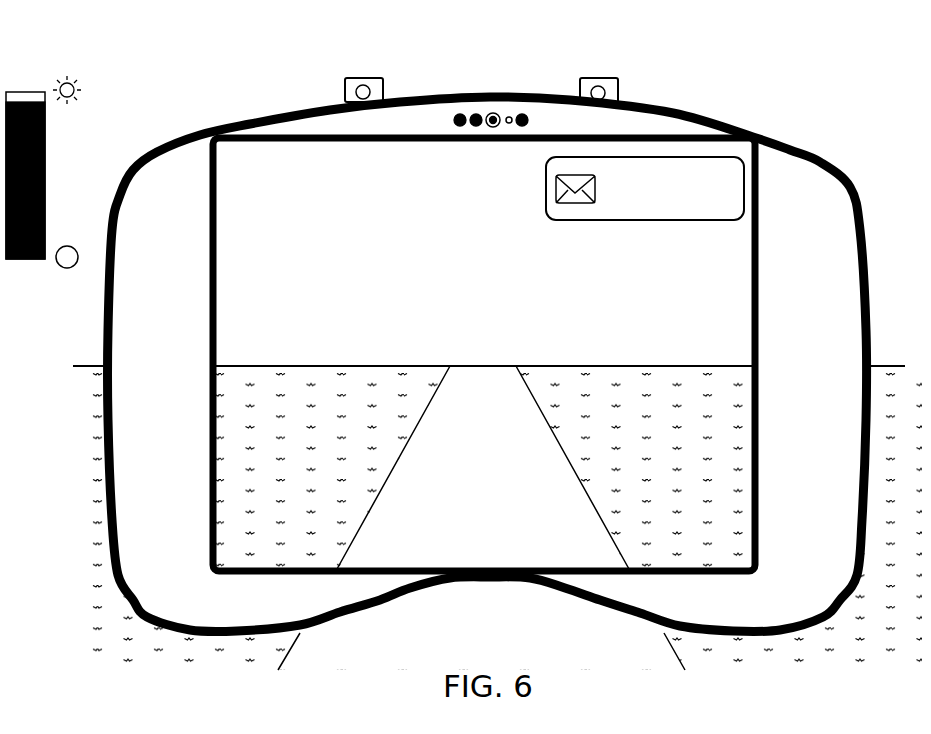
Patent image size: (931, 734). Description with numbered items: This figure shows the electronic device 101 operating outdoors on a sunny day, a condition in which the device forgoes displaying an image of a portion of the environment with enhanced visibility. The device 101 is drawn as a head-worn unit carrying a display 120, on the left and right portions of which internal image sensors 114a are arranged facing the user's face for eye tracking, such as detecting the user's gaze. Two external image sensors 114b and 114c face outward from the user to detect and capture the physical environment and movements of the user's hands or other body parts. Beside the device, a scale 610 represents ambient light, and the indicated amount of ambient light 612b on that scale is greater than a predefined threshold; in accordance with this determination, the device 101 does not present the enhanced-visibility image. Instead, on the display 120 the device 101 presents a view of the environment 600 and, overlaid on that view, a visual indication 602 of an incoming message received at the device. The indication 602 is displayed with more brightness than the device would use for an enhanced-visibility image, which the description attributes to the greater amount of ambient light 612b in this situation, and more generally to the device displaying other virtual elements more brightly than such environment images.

The electronic device 101 is at (715, 122).
The internal image sensors 114a is at (550, 110).
The external image sensor 114b is at (388, 86).
The external image sensor 114c is at (620, 90).
The display 120 is at (742, 576).
The view of the environment 600 is at (503, 196).
The visual indication 602 is at (568, 221).
The scale 610 is at (13, 260).
The amount of ambient light 612b is at (22, 92).